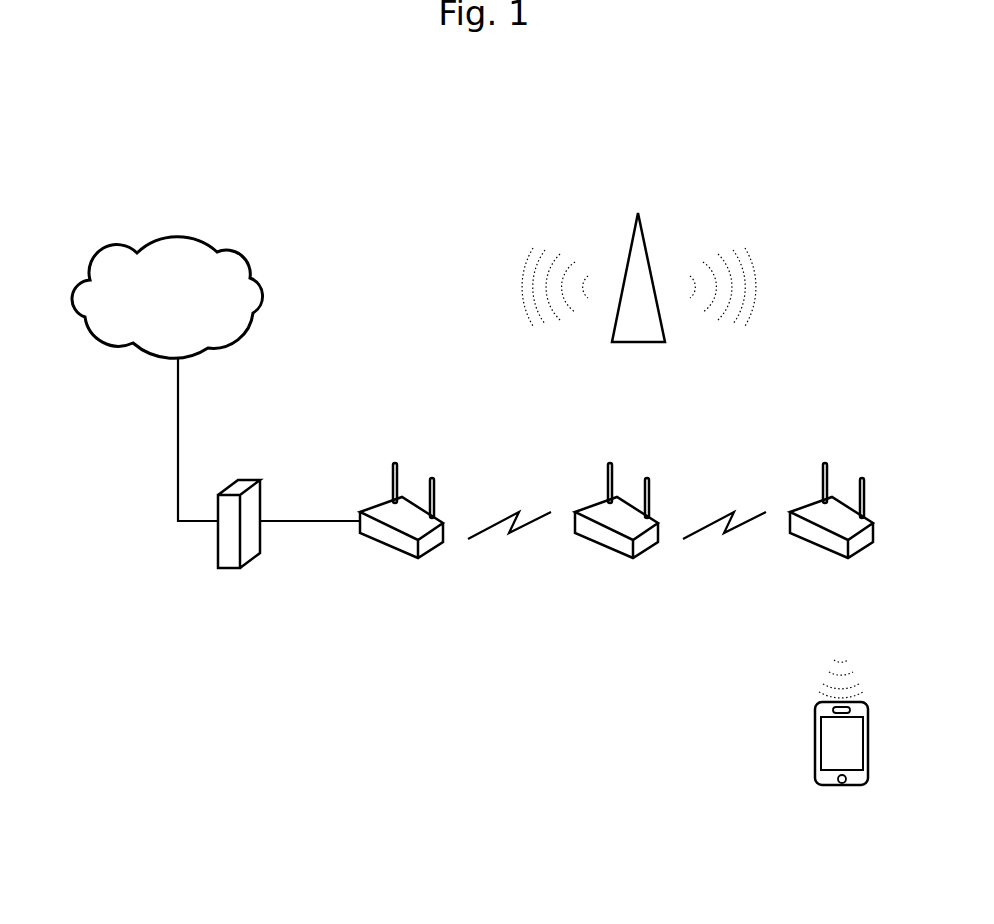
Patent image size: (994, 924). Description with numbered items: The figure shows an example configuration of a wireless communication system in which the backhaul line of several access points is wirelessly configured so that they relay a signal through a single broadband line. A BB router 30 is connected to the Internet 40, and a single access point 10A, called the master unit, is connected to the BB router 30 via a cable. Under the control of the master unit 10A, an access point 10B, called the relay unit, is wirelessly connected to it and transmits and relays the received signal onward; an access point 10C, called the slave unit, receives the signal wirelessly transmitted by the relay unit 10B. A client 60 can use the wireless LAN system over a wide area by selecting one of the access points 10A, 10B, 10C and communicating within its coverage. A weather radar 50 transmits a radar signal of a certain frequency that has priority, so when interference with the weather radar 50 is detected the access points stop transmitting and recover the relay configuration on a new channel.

The access point (master unit) 10A is at (415, 476).
The access point (relay unit) 10B is at (630, 476).
The access point (slave unit) 10C is at (843, 476).
The BB router 30 is at (255, 470).
The Internet 40 is at (203, 234).
The weather radar 50 is at (649, 209).
The client 60 is at (767, 751).